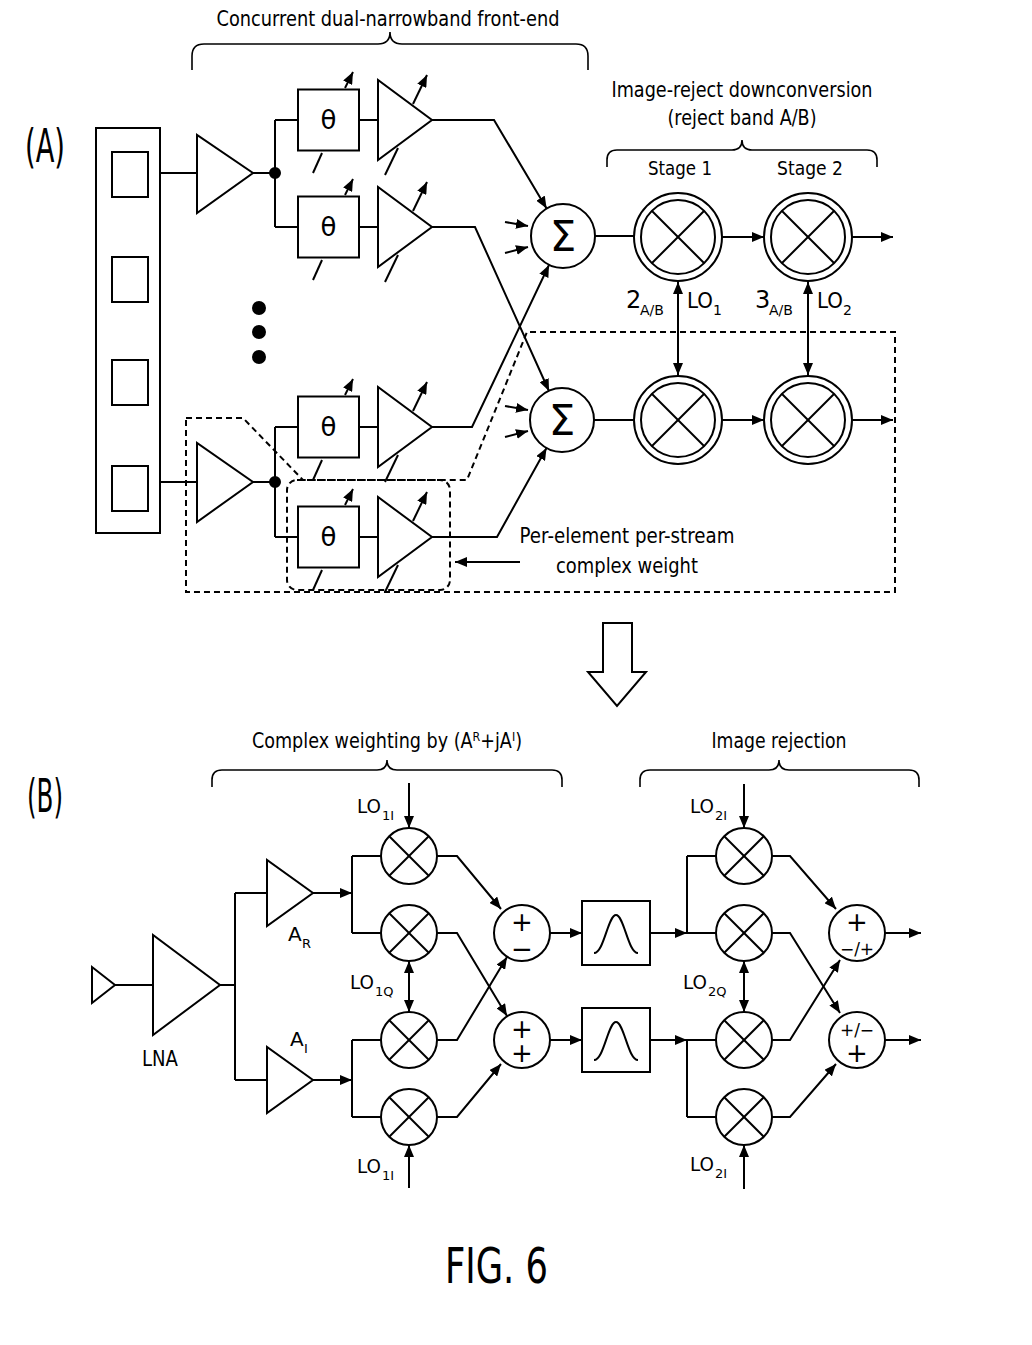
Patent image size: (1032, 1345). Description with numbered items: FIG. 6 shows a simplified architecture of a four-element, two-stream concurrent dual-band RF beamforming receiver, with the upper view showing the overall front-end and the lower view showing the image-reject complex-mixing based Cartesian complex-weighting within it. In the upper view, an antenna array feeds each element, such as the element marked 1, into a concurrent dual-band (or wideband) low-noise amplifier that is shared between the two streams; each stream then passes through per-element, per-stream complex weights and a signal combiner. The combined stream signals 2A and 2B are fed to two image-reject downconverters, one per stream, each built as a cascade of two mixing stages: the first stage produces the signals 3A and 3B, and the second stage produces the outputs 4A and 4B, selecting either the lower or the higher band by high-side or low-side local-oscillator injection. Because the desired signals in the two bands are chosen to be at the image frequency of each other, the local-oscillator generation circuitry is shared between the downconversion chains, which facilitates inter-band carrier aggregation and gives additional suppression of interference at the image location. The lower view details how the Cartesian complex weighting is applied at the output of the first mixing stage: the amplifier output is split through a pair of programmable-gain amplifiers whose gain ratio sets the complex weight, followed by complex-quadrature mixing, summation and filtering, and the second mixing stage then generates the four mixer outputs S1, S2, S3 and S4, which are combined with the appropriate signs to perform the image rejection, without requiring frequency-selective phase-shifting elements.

The antenna array element 1 is at (139, 330).
The band A combined signal 2A is at (614, 222).
The band A first-stage downconverted signal 3A is at (743, 222).
The band A second-stage output signal 4A is at (872, 222).
The band B combined signal 2B is at (613, 406).
The band B first-stage downconverted signal 3B is at (743, 406).
The band B second-stage output signal 4B is at (872, 406).
The mixer output signal S1 is at (776, 868).
The mixer output signal S2 is at (778, 959).
The mixer output signal S3 is at (778, 1015).
The mixer output signal S4 is at (776, 1106).